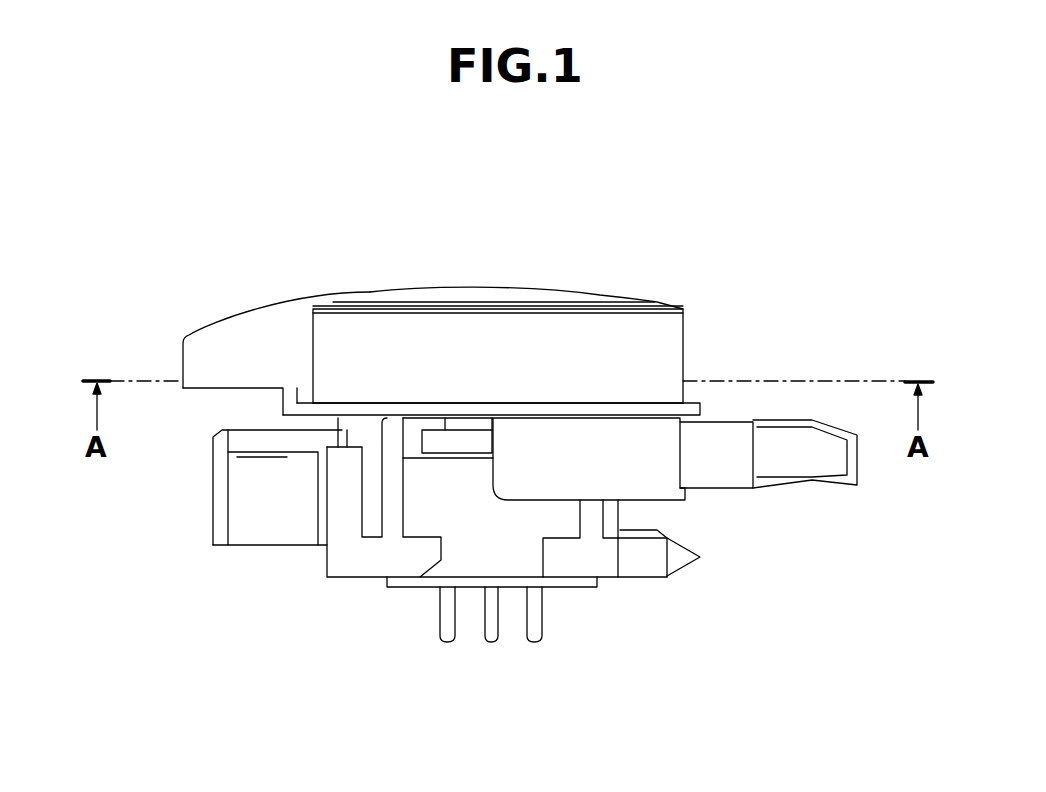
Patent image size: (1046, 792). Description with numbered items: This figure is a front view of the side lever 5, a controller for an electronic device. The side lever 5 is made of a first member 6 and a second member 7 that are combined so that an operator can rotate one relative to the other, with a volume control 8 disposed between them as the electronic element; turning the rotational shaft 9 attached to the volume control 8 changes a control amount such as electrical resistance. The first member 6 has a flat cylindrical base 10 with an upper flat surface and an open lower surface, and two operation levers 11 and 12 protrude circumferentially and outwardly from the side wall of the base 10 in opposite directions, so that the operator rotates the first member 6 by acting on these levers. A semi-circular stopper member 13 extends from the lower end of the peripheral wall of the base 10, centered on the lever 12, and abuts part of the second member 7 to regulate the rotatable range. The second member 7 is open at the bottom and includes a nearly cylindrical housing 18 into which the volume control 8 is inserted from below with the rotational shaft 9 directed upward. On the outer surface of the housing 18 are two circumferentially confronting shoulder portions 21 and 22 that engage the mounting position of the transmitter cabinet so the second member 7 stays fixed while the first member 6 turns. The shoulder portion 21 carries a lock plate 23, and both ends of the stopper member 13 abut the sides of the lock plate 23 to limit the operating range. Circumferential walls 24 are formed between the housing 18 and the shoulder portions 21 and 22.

The side lever 5 is at (762, 256).
The first member 6 is at (599, 300).
The second member 7 is at (513, 587).
The volume control 8 is at (423, 582).
The rotational shaft 9 is at (463, 424).
The flat cylindrical base 10 is at (541, 327).
The operation lever 11 is at (217, 337).
The operation lever 12 is at (812, 462).
The semi-circular stopper member 13 is at (627, 472).
The housing 18 is at (472, 587).
The shoulder portion 21 is at (220, 507).
The shoulder portion 22 is at (681, 572).
The lock plate 23 is at (347, 533).
The circumferential wall 24 is at (390, 475).